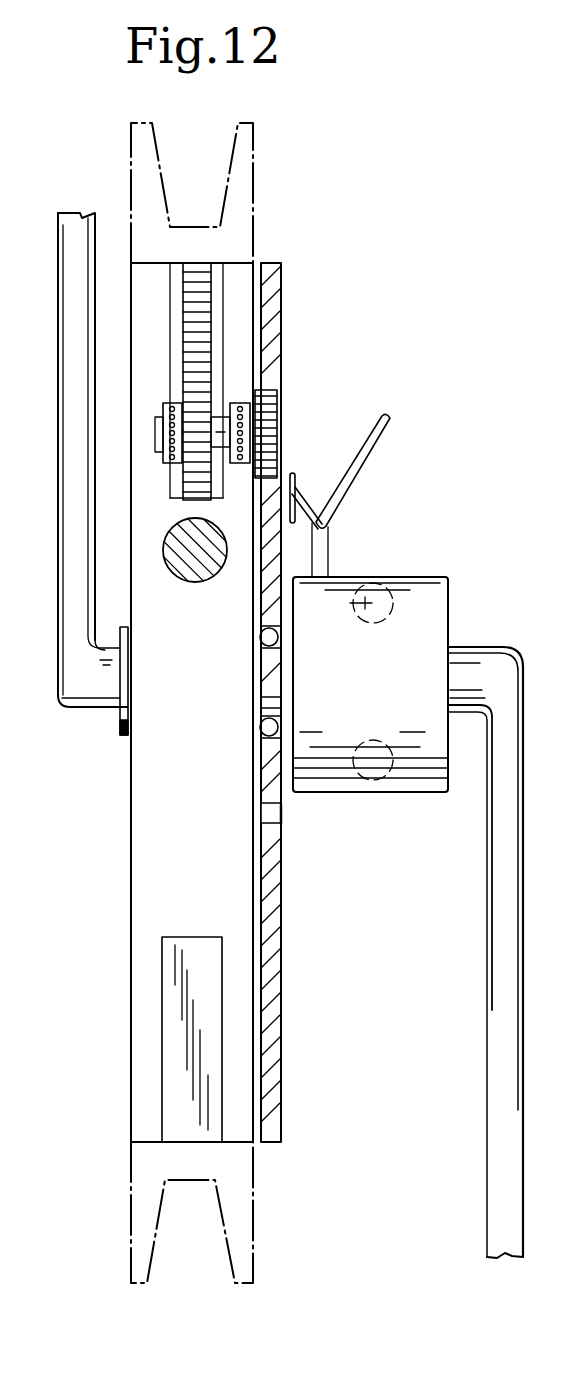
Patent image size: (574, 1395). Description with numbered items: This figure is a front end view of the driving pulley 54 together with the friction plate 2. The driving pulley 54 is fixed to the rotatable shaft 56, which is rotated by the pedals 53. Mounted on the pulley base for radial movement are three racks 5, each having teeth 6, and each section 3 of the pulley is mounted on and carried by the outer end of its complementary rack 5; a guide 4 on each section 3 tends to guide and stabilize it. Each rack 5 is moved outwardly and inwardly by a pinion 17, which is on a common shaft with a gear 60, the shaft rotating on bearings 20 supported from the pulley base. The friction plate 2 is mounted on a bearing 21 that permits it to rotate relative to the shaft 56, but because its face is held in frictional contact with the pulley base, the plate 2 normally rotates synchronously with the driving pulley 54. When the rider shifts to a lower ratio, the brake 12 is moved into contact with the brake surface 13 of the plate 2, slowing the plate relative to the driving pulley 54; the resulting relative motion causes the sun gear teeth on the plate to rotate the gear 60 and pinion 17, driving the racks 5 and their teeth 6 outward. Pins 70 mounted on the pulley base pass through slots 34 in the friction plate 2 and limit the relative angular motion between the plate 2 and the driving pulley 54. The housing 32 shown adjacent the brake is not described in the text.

The friction plate 2 is at (270, 293).
The section 3 is at (245, 153).
The guide 4 is at (165, 562).
The rack 5 is at (168, 297).
The teeth 6 is at (197, 338).
The brake 12 is at (298, 473).
The brake surface 13 is at (297, 472).
The pinion 17 is at (185, 385).
The bearings 20 is at (237, 480).
The bearing 21 is at (276, 636).
The housing 32 is at (435, 617).
The slot 34 is at (275, 820).
The pedals 53 is at (495, 1038).
The driving pulley 54 is at (143, 803).
The rotatable shaft 56 is at (82, 680).
The gear 60 is at (278, 393).
The pin 70 is at (272, 811).